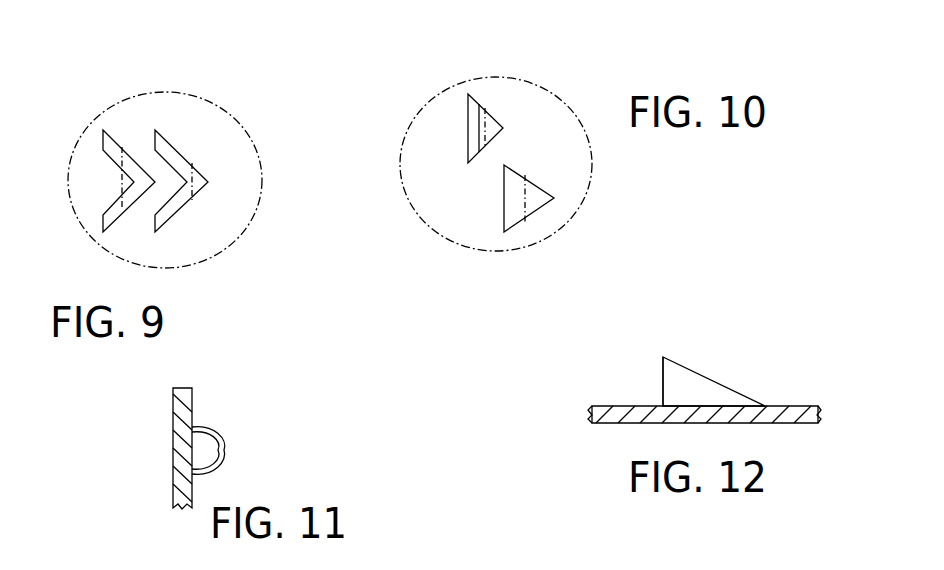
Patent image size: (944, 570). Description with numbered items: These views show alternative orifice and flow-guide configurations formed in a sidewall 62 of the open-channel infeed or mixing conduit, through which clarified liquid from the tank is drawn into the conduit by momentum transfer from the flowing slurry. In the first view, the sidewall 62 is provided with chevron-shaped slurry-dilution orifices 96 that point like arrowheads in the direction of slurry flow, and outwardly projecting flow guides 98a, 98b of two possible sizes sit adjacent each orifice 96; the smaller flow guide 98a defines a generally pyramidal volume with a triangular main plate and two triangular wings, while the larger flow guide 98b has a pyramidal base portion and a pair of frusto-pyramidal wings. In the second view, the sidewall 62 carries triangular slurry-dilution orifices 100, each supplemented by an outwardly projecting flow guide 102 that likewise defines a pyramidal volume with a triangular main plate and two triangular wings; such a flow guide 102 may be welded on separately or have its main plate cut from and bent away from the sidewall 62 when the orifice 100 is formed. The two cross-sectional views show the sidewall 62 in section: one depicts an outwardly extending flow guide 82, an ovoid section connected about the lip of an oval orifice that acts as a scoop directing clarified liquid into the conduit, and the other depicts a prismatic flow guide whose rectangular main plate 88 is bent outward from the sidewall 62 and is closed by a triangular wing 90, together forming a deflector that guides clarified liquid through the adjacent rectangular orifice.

In FIG. 9, the sidewall 62 is at (225, 127).
In FIG. 10, the sidewall 62 is at (532, 108).
In FIG. 11, the sidewall 62 is at (173, 402).
In FIG. 12, the sidewall 62 is at (798, 425).
In FIG. 9, the chevron-shaped slurry-dilution orifice 96 is at (163, 162).
In FIG. 9, the flow guide 98a is at (128, 195).
In FIG. 9, the flow guide 98b is at (200, 190).
In FIG. 10, the triangular slurry-dilution orifice 100 is at (505, 210).
In FIG. 10, the flow guide 102 is at (493, 138).
In FIG. 11, the flow guide 82 is at (222, 442).
In FIG. 12, the rectangular main plate 88 is at (695, 370).
In FIG. 12, the triangular wing 90 is at (675, 390).